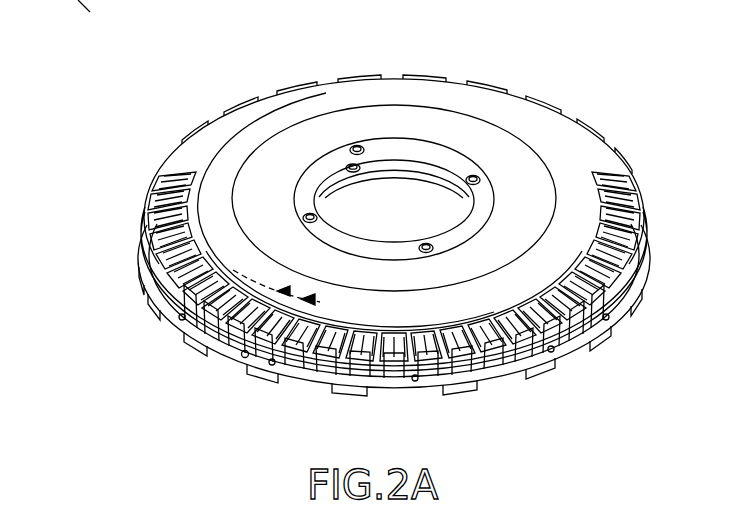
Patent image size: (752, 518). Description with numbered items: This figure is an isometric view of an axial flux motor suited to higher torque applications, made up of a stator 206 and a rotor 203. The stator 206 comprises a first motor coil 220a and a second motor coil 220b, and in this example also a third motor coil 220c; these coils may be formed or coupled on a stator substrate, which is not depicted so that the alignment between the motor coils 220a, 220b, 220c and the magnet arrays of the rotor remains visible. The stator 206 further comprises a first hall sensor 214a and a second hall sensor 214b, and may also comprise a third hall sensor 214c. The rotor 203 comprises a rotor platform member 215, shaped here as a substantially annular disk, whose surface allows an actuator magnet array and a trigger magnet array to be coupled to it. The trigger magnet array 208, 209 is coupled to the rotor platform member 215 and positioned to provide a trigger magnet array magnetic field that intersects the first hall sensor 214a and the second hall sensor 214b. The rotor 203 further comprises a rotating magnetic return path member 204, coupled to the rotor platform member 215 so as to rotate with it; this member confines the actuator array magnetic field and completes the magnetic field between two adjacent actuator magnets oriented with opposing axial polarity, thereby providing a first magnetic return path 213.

The rotor 203 is at (466, 383).
The rotating magnetic return path member 204 is at (297, 105).
The stator 206 is at (174, 155).
The trigger magnet array 208 is at (244, 358).
The trigger magnet array 209 is at (258, 370).
The first magnetic return path 213 is at (330, 302).
The first hall sensor 214a is at (150, 268).
The second hall sensor 214b is at (158, 293).
The third hall sensor 214c is at (186, 320).
The rotor platform member 215 is at (532, 360).
The first motor coil 220a is at (336, 266).
The second motor coil 220b is at (394, 266).
The third motor coil 220c is at (150, 180).